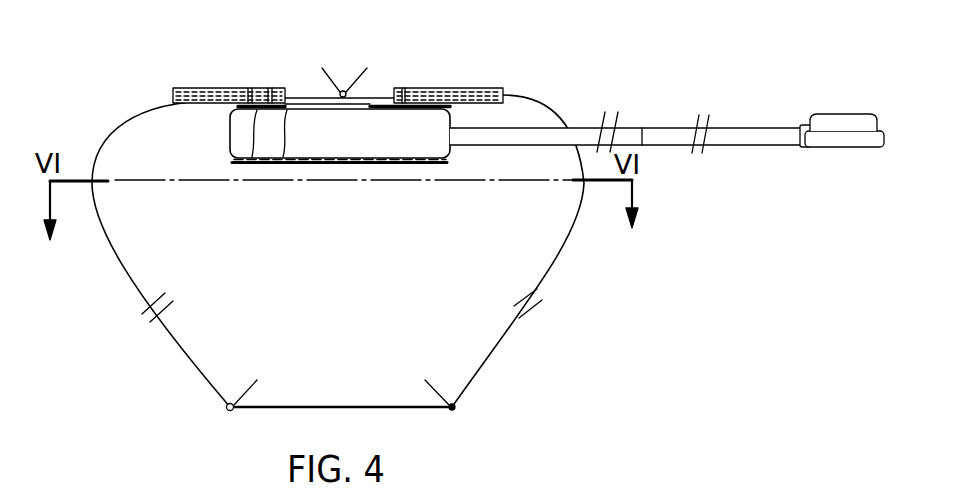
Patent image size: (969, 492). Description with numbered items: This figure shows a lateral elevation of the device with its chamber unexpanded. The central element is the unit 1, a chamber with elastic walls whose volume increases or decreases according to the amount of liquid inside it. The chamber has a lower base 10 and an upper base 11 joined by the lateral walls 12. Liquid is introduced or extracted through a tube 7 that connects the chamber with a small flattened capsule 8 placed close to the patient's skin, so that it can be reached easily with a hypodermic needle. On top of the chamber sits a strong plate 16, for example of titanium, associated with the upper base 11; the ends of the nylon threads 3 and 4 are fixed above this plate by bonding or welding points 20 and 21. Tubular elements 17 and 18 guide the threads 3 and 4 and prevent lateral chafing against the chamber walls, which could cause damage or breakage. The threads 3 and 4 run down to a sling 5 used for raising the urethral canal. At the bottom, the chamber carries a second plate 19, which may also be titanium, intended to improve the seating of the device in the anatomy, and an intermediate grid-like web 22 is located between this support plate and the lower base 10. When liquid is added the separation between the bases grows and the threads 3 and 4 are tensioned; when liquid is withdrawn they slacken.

The unit 1 is at (368, 130).
The nylon thread 3 is at (121, 258).
The nylon thread 4 is at (557, 248).
The sling 5 is at (385, 407).
The tube 7 is at (746, 128).
The capsule 8 is at (833, 122).
The lower base 10 is at (252, 88).
The upper base 11 is at (245, 88).
The lateral walls 12 is at (227, 142).
The plate 16 is at (308, 101).
The tubular element 17 is at (190, 88).
The tubular element 18 is at (484, 88).
The second plate 19 is at (403, 158).
The bonding or welding point 20 is at (263, 88).
The bonding or welding point 21 is at (398, 88).
The grid-like web 22 is at (345, 158).